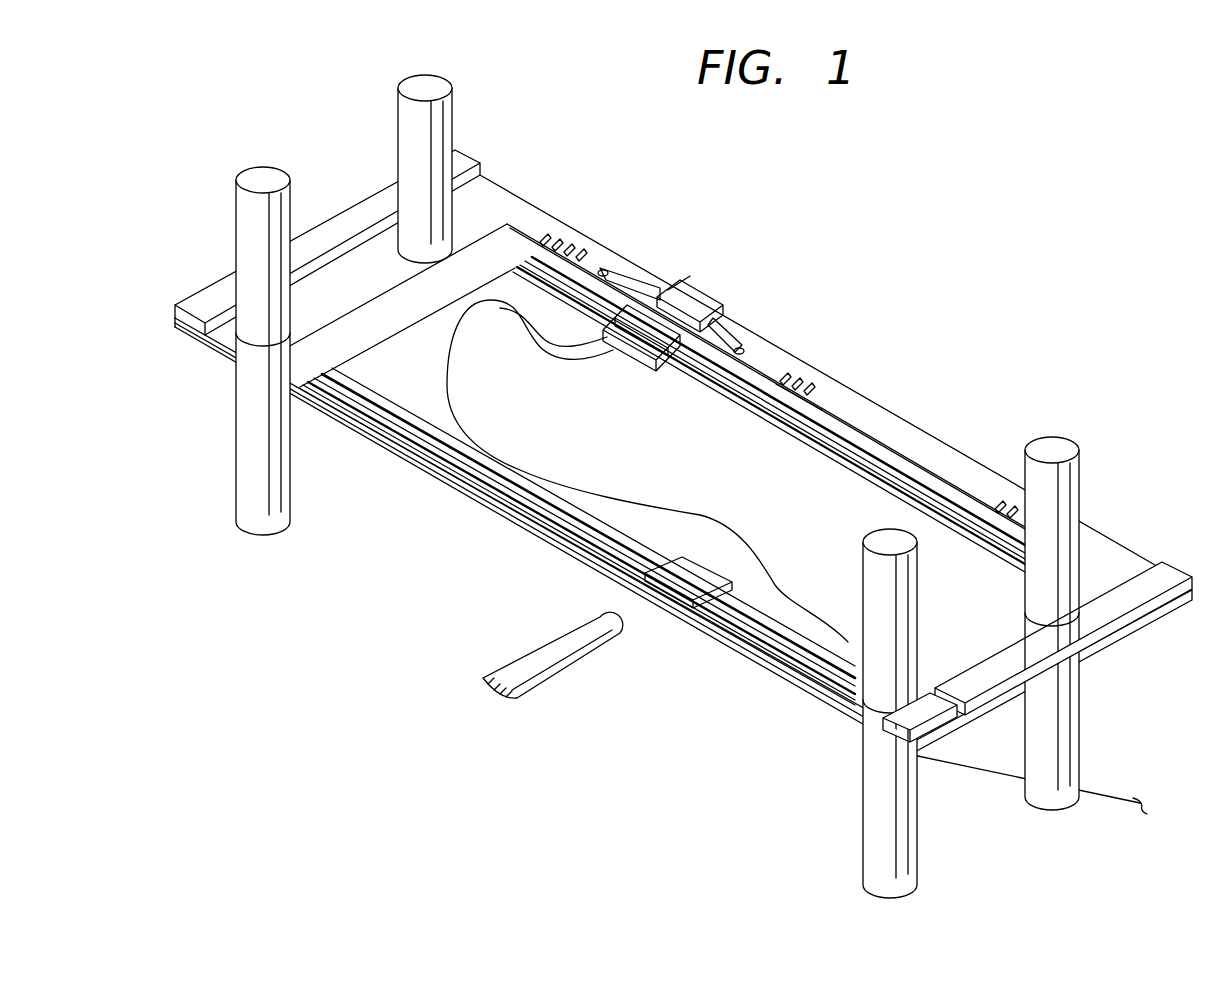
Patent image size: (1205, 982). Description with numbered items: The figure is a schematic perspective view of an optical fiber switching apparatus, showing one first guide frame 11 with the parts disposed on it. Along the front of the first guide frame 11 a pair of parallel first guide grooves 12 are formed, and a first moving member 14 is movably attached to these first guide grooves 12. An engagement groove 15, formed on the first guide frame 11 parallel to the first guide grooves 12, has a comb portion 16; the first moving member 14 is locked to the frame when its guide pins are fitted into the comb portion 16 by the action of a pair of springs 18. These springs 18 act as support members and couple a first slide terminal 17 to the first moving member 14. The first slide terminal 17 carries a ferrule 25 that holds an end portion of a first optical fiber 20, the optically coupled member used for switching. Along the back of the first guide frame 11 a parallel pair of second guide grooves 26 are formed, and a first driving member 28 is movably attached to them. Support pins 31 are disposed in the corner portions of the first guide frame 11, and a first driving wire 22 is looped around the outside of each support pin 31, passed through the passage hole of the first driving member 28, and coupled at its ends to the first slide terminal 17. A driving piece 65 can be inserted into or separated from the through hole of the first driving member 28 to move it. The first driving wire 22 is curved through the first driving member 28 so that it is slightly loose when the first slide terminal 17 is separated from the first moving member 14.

The first guide frame 11 is at (530, 202).
The first guide grooves 12 is at (880, 458).
The first moving member 14 is at (655, 352).
The engagement groove 15 is at (810, 382).
The comb portion 16 is at (840, 395).
The first slide terminal 17 is at (673, 283).
The springs 18 is at (618, 268).
The first optical fiber 20 is at (1093, 797).
The first driving wire 22 is at (813, 687).
The ferrule 25 is at (687, 293).
The second guide grooves 26 is at (402, 435).
The first driving member 28 is at (665, 605).
The support pins 31 is at (258, 173).
The driving piece 65 is at (540, 677).